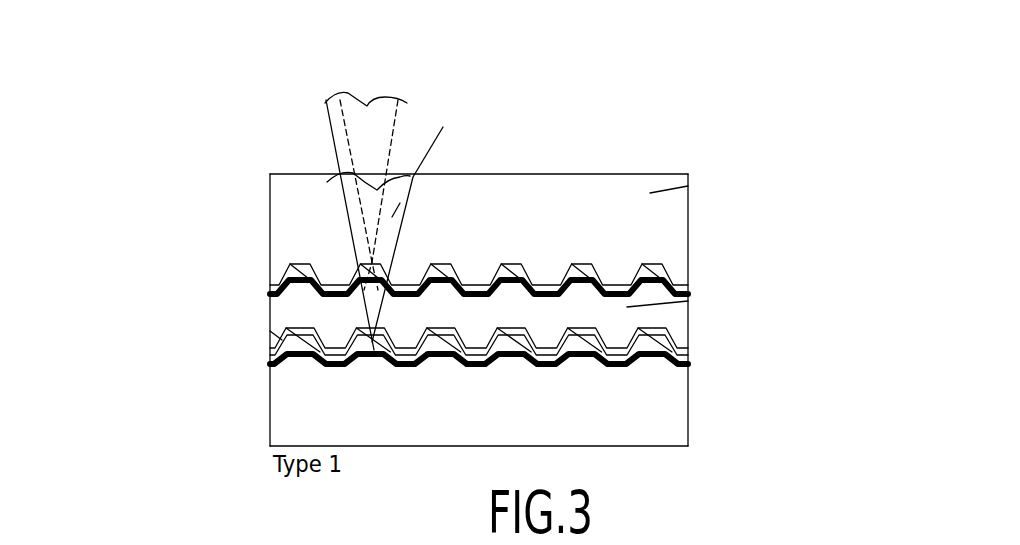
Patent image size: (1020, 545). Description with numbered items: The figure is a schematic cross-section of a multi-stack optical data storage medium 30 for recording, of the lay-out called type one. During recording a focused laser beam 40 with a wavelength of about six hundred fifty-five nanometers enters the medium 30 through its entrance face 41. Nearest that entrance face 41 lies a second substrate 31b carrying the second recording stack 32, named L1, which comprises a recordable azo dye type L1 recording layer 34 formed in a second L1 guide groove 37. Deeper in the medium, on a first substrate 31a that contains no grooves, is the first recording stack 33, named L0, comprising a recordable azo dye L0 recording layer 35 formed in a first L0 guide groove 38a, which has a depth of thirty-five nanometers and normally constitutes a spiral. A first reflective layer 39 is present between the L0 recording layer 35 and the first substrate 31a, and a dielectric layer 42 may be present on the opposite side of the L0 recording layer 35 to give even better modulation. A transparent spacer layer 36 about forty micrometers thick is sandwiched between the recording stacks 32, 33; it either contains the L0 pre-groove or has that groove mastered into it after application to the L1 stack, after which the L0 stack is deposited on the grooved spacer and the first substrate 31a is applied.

The multi-stack optical data storage medium 30 is at (582, 130).
The first substrate 31a is at (643, 418).
The second substrate 31b is at (688, 186).
The second recording stack 32 is at (263, 265).
The first recording stack 33 is at (263, 335).
The L1 recording layer 34 is at (660, 272).
The L0 recording layer 35 is at (665, 345).
The transparent spacer layer 36 is at (688, 301).
The second L1 guide groove 37 is at (585, 259).
The first L0 guide groove 38a is at (590, 338).
The first reflective layer 39 is at (637, 360).
The laser beam 40 is at (380, 137).
The entrance face 41 is at (642, 168).
The dielectric layer 42 is at (270, 331).